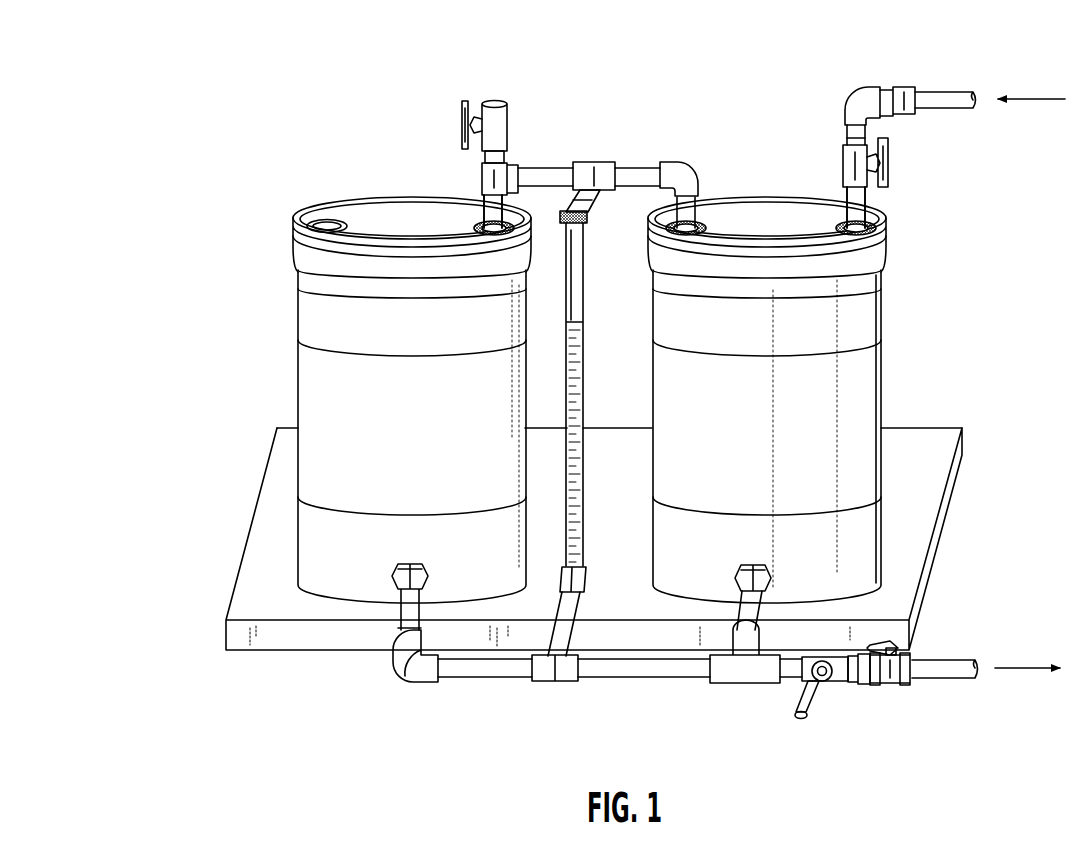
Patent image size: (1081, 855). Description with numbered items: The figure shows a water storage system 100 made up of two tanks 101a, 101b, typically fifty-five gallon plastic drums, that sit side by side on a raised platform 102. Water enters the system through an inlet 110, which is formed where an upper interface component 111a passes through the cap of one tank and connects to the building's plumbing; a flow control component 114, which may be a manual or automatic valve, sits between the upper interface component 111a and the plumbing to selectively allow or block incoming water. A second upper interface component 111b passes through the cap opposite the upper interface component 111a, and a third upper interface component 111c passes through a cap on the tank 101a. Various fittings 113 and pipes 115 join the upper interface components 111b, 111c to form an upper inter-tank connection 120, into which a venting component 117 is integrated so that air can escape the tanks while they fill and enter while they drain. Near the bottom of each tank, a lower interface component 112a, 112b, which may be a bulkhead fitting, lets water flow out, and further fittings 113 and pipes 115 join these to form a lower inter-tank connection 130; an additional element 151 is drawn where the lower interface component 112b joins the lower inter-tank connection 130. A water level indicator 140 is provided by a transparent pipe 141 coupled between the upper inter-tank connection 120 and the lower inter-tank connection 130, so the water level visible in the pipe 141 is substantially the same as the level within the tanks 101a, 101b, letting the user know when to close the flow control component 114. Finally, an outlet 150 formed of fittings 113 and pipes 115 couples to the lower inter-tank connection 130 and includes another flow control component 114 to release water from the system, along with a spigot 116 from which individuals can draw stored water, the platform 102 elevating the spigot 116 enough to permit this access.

The water storage system 100 is at (215, 88).
The tank 101a is at (365, 390).
The tank 101b is at (816, 368).
The raised platform 102 is at (253, 517).
The inlet 110 is at (838, 76).
The upper interface component 111a is at (845, 224).
The upper interface component 111b is at (700, 214).
The upper interface component 111c is at (480, 227).
The lower interface component 112a is at (402, 563).
The lower interface component 112b is at (753, 563).
The fitting 113 is at (858, 88).
The flow control component 114 is at (893, 165).
The pipe 115 is at (932, 92).
The spigot 116 is at (802, 720).
The venting component 117 is at (466, 100).
The upper inter-tank connection 120 is at (610, 74).
The lower inter-tank connection 130 is at (468, 684).
The water level indicator 140 is at (605, 440).
The transparent pipe 141 is at (578, 372).
The outlet assembly 150 is at (906, 745).
The connecting pipe 151 is at (743, 603).